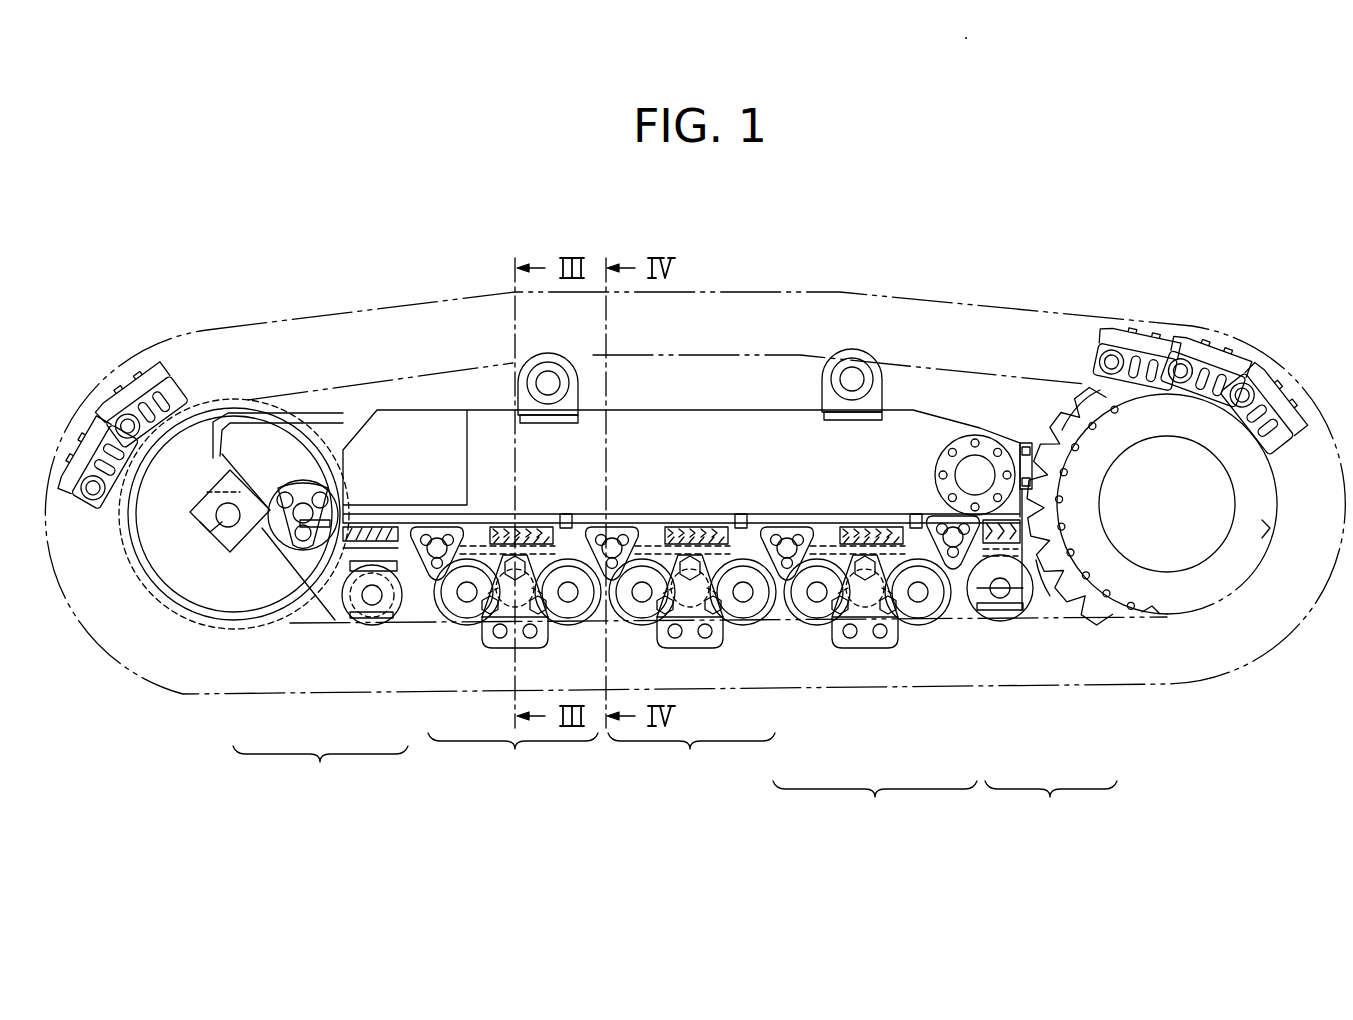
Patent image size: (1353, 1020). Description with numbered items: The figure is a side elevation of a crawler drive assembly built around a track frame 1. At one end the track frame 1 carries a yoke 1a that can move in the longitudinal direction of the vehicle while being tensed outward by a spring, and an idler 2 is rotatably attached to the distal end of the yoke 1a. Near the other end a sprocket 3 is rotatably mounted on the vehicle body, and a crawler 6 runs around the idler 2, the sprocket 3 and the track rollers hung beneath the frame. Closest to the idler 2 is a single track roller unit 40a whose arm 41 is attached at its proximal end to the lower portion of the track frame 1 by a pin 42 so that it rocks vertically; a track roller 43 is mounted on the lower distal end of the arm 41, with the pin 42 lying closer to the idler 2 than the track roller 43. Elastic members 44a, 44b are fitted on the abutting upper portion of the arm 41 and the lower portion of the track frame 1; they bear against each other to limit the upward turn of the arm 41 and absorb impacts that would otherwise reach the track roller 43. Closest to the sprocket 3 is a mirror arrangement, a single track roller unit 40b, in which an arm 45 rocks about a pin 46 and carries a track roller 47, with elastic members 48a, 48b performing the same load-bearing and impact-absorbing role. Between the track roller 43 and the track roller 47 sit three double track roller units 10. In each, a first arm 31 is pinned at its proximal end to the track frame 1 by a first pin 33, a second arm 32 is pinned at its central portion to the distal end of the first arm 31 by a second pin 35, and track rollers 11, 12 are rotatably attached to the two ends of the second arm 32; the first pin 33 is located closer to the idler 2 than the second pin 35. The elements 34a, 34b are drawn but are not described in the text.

The track frame 1 is at (705, 432).
The yoke 1a is at (306, 418).
The idler 2 is at (186, 604).
The sprocket 3 is at (1147, 583).
The crawler 6 is at (1183, 332).
The double track roller unit 10 is at (694, 676).
The track roller 11 is at (822, 635).
The track roller 12 is at (917, 628).
The first arm 31 is at (803, 625).
The second arm 32 is at (938, 625).
The first pin 33 is at (783, 625).
The front mounting bracket 34a is at (815, 520).
The rear mounting bracket 34b is at (893, 517).
The second pin 35 is at (870, 648).
The single track roller unit 40a is at (320, 769).
The single track roller unit 40b is at (1051, 803).
The arm 41 is at (318, 552).
The pin 42 is at (282, 548).
The track roller 43 is at (404, 618).
The elastic member 44a is at (307, 513).
The elastic member 44b is at (388, 527).
The arm 45 is at (1013, 607).
The pin 46 is at (968, 612).
The track roller 47 is at (1053, 590).
The elastic member 48a is at (1090, 395).
The elastic member 48b is at (1055, 548).